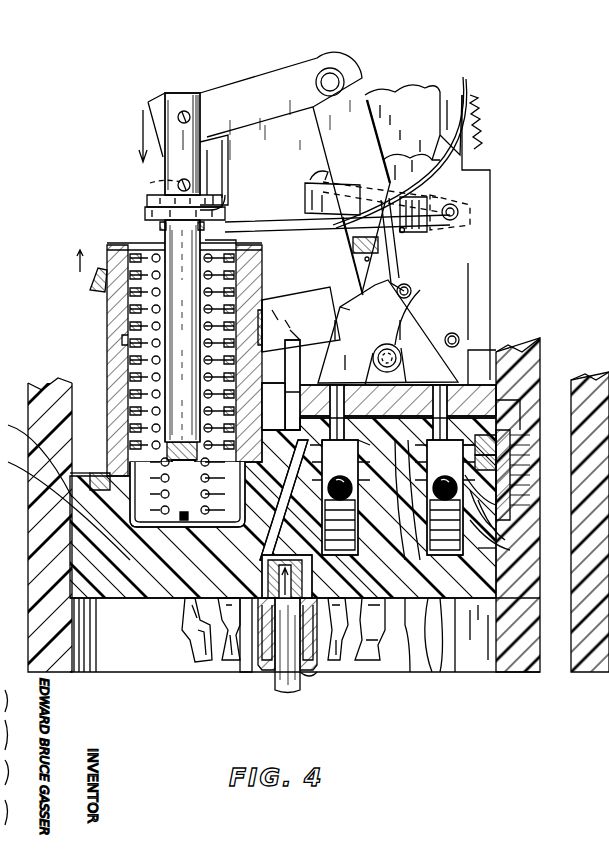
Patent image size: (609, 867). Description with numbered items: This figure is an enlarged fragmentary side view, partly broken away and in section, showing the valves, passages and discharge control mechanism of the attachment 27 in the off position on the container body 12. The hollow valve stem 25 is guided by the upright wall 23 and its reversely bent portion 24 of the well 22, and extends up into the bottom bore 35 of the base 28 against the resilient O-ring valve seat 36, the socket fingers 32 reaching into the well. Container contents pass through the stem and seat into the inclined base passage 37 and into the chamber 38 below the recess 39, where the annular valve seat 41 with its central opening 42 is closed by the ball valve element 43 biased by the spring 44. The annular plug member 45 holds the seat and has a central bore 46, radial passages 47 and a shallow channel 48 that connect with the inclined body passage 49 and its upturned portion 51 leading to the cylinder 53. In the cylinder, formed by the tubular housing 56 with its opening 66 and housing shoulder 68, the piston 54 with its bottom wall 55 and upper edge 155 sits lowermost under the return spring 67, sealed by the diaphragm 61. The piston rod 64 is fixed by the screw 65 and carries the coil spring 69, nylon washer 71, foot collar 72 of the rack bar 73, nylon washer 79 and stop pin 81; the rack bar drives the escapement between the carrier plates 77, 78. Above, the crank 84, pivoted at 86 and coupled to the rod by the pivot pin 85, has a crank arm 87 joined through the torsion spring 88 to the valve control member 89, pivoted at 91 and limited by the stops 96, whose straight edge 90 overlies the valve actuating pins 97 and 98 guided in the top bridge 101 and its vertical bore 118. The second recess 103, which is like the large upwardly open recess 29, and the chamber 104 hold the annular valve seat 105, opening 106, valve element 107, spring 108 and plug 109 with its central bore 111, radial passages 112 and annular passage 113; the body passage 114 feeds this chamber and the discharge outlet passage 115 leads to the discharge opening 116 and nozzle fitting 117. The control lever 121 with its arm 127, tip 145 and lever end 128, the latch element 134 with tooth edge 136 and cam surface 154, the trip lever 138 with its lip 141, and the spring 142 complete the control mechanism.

The body 12 is at (65, 506).
The well 22 is at (36, 456).
The upright wall 23 is at (265, 660).
The reversely bent portion 24 is at (285, 672).
The hollow valve stem 25 is at (278, 690).
The attachment 27 is at (545, 345).
The base 28 is at (426, 635).
The recess 29 is at (40, 402).
The socket fingers 32 is at (200, 672).
The bottom bore 35 is at (305, 690).
The O-ring valve seat 36 is at (239, 628).
The inclined base passage 37 is at (327, 628).
The chamber 38 is at (340, 545).
The recess 39 is at (405, 555).
The annular valve seat 41 is at (295, 482).
The central opening 42 is at (355, 490).
The ball valve element 43 is at (420, 598).
The spring 44 is at (392, 605).
The annular plug member 45 is at (310, 428).
The central bore 46 is at (300, 428).
The radial passages 47 is at (360, 383).
The shallow channel 48 is at (385, 343).
The inclined body passage 49 is at (192, 622).
The upturned passage portion 51 is at (170, 640).
The cylinder 53 is at (125, 426).
The piston 54 is at (132, 448).
The bottom wall 55 is at (197, 484).
The tubular housing 56 is at (262, 295).
The sealing diaphragm 61 is at (168, 520).
The piston rod 64 is at (165, 160).
The screw 65 is at (98, 665).
The opening 66 is at (166, 238).
The return spring 67 is at (262, 272).
The housing shoulder 68 is at (195, 245).
The coil spring 69 is at (160, 226).
The nylon washer 71 is at (145, 213).
The foot collar 72 is at (146, 200).
The rack bar 73 is at (230, 152).
The carrier plate 77 is at (415, 95).
The carrier plate 78 is at (468, 85).
The nylon washer 79 is at (215, 195).
The radial stop pin 81 is at (178, 185).
The crank 84 is at (357, 80).
The pivot pin 85 is at (178, 116).
The crank pivot 86 is at (331, 92).
The crank arm 87 is at (373, 153).
The torsion spring 88 is at (380, 244).
The valve control member 89 is at (420, 335).
The straight edge 90 is at (490, 372).
The pivot 91 is at (422, 315).
The rigid stops 96 is at (410, 285).
The valve actuating pin 97 is at (334, 383).
The valve actuating pin 98 is at (440, 380).
The top bridge 101 is at (292, 412).
The recess 103 is at (515, 430).
The chamber 104 is at (518, 552).
The annular valve seat 105 is at (520, 512).
The opening 106 is at (495, 548).
The valve element 107 is at (520, 538).
The spring 108 is at (472, 635).
The plug 109 is at (520, 494).
The central bore 111 is at (515, 400).
The radial passages 112 is at (438, 598).
The annular passage 113 is at (520, 478).
The body passage 114 is at (452, 598).
The discharge outlet passage 115 is at (505, 444).
The discharge opening 116 is at (520, 436).
The nozzle fitting 117 is at (520, 462).
The vertical bore 118 is at (440, 400).
The control lever 121 is at (300, 295).
The arm 127 is at (364, 295).
The lever end 128 is at (85, 290).
The latch element 134 is at (305, 203).
The tooth edge 136 is at (340, 222).
The trip lever 138 is at (262, 210).
The lip 141 is at (150, 183).
The spring 142 is at (478, 98).
The tip 145 is at (340, 232).
The cam surface 154 is at (400, 233).
The upper edge 155 is at (120, 348).